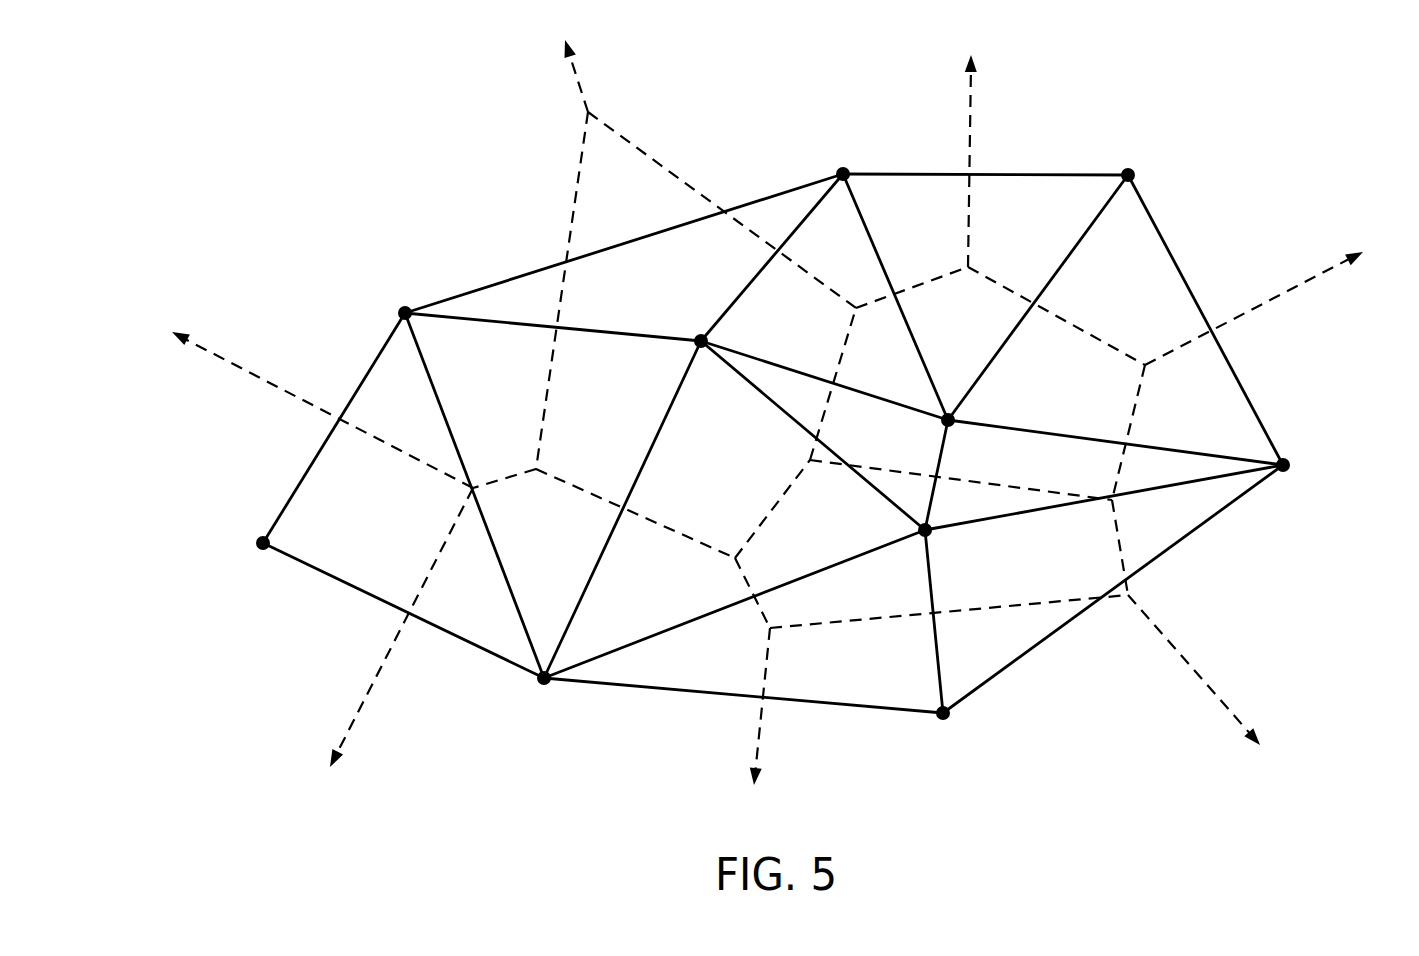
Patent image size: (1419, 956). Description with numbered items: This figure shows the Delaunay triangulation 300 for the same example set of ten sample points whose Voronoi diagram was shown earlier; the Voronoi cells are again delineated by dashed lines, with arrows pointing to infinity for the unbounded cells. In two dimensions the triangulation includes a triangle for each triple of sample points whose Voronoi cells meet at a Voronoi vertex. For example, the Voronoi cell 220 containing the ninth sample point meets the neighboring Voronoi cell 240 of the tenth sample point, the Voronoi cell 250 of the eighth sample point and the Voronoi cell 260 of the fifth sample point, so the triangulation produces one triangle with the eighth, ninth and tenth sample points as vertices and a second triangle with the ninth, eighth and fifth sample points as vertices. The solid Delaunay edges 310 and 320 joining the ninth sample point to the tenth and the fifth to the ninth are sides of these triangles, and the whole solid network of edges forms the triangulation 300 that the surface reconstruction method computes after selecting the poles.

The Voronoi cell 220 is at (1047, 122).
The Voronoi cell of site S10 240 is at (1328, 377).
The Voronoi cell of site S8 250 is at (1072, 401).
The Voronoi cell of site S5 260 is at (732, 102).
The Delaunay triangulation with Voronoi diagram 300 is at (1022, 862).
The Delaunay edge between S9 and S10 310 is at (1148, 270).
The Delaunay edge between S5 and S9 320 is at (910, 195).